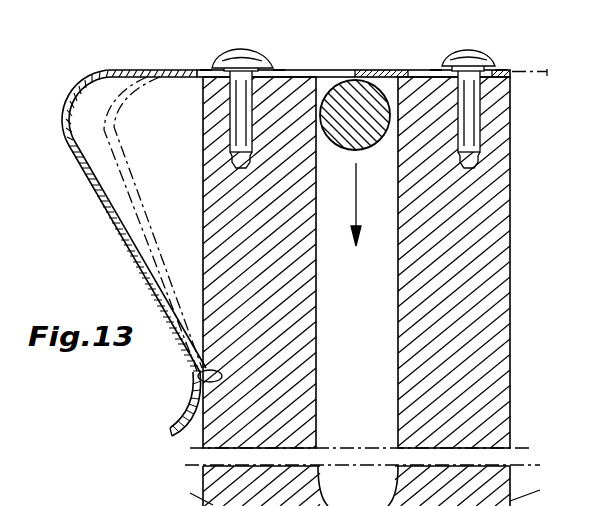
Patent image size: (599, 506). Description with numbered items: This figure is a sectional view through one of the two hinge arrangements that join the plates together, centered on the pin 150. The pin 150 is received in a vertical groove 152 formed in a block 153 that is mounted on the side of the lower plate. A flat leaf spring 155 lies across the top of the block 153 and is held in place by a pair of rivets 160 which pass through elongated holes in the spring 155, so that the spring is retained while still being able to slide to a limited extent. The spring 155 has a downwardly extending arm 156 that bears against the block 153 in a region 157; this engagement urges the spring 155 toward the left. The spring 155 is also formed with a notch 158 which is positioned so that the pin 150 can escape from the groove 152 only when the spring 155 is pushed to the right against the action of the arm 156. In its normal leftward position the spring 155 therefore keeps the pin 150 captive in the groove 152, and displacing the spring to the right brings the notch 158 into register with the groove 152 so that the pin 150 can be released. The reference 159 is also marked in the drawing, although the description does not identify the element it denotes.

The pin 150 is at (380, 72).
The vertical groove 152 is at (397, 262).
The block 153 is at (217, 246).
The flat leaf spring 155 is at (364, 80).
The downwardly extending arm 156 is at (93, 193).
The region 157 is at (200, 376).
The notch 158 is at (313, 70).
The recess 159 is at (187, 70).
The rivets 160 is at (236, 54).